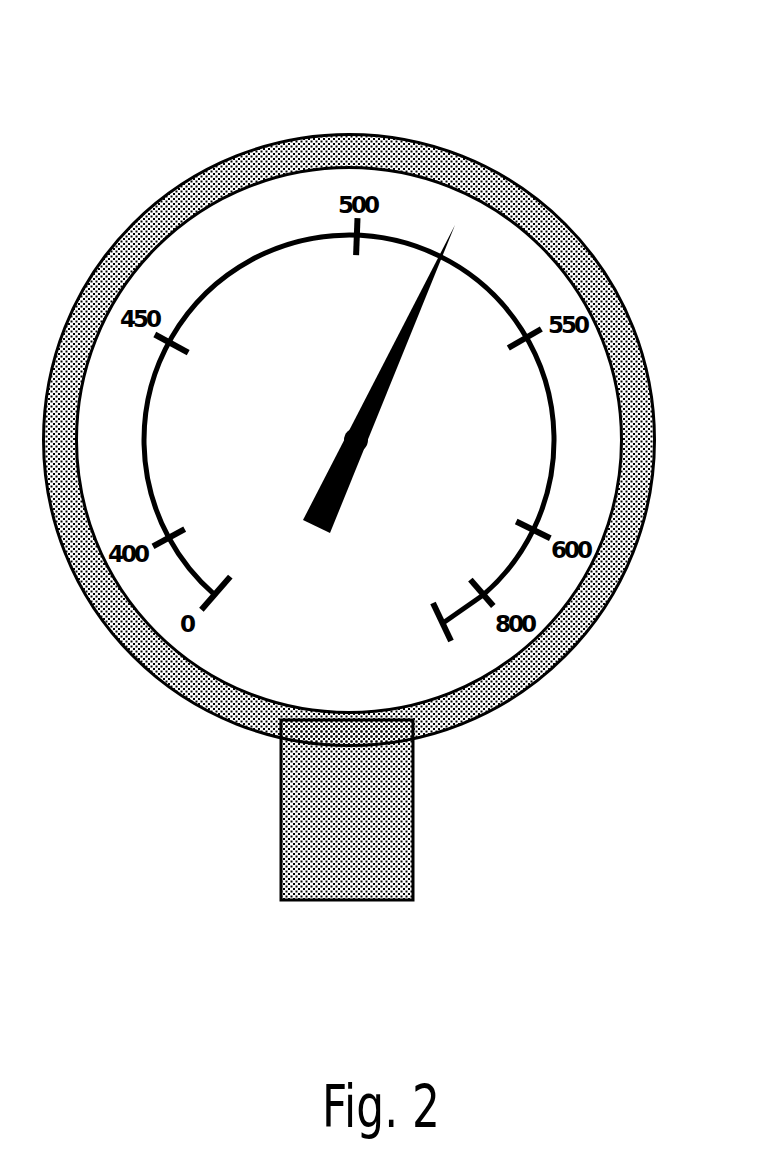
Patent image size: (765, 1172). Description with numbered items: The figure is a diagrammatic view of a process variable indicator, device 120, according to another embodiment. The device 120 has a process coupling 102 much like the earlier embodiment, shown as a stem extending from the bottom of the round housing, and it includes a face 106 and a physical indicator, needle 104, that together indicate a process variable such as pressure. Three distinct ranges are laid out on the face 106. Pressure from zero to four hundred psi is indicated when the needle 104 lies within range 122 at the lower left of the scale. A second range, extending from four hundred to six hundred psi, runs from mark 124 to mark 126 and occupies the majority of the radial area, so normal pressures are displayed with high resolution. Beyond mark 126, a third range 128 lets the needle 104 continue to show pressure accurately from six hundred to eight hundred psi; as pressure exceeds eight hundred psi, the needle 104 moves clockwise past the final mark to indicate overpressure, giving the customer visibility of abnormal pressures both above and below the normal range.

The device 120 is at (583, 112).
The process coupling 102 is at (342, 900).
The needle 104 is at (386, 394).
The face 106 is at (260, 653).
The range 122 is at (188, 521).
The mark 124 is at (177, 527).
The mark 126 is at (525, 519).
The third range 128 is at (518, 518).